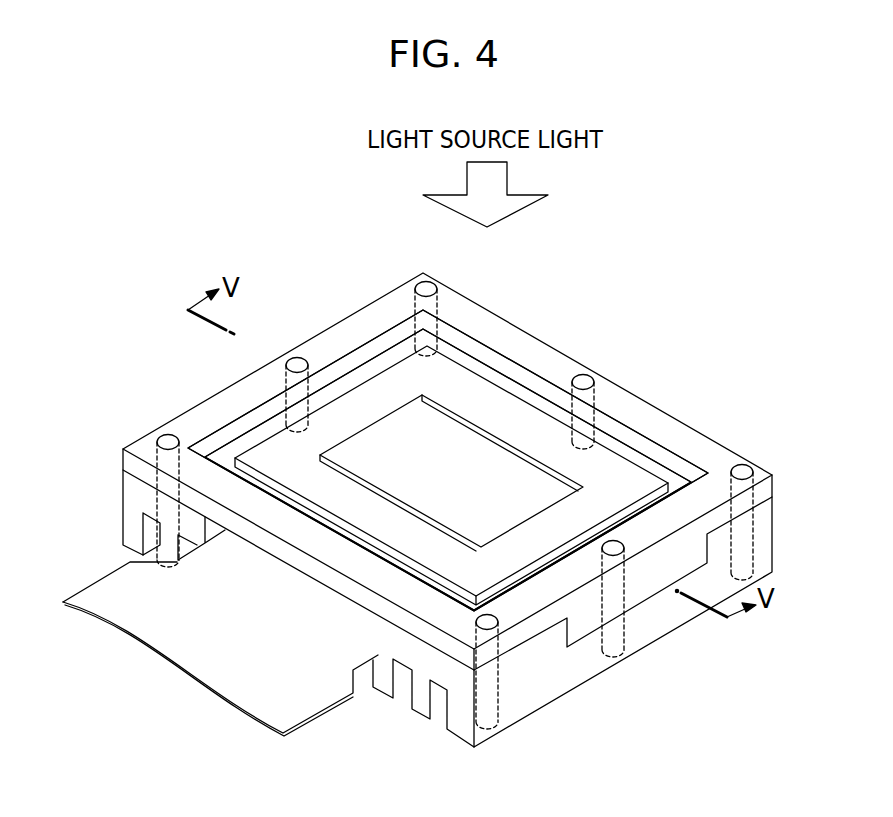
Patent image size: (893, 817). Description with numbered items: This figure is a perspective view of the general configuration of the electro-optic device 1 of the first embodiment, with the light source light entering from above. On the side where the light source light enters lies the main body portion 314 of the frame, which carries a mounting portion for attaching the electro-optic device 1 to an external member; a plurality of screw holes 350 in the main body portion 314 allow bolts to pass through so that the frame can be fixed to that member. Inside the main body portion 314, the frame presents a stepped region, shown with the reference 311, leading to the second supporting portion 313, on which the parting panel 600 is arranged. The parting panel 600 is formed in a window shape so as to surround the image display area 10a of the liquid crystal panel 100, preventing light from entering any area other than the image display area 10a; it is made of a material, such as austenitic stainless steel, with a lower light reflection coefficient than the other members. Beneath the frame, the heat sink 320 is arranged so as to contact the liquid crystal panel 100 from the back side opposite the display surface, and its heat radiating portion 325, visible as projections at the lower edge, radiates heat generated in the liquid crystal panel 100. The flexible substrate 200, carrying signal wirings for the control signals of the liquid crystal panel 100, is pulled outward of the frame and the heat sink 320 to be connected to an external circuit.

The electro-optic device 1 is at (668, 280).
The parting panel 600 is at (455, 380).
The liquid crystal panel 100 is at (475, 428).
The image display area 10a is at (447, 432).
The first frame portion 311 is at (623, 430).
The second supporting portion 313 is at (652, 468).
The main body portion 314 is at (713, 457).
The screw holes 350 is at (745, 468).
The heat sink 320 is at (767, 537).
The heat radiating portion 325 is at (399, 717).
The flexible substrate 200 is at (107, 583).